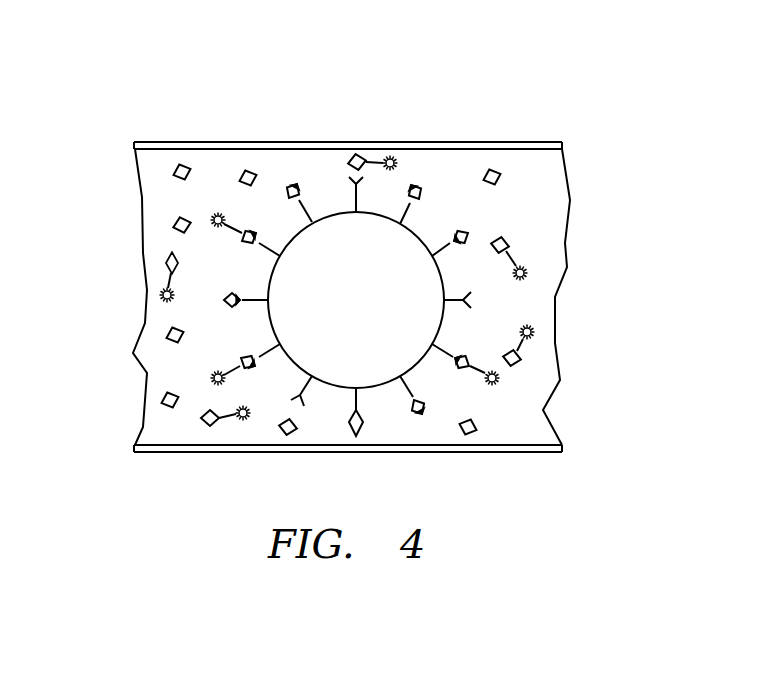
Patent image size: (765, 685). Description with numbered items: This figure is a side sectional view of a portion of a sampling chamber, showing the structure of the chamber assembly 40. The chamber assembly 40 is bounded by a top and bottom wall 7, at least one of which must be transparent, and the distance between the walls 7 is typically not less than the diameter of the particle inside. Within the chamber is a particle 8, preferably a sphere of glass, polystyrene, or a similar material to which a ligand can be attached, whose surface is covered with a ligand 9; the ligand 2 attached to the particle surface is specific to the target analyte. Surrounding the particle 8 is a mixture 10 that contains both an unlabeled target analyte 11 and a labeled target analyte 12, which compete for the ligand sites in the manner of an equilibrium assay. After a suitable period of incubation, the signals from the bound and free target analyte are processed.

The chamber assembly 40 is at (340, 98).
The top and bottom wall 7 is at (495, 141).
The particle 8 is at (374, 310).
The ligand 2 is at (470, 302).
The ligand 9 is at (208, 247).
The mixture 10 is at (508, 245).
The target analyte 11 is at (221, 302).
The labeled target analyte 12 is at (237, 353).